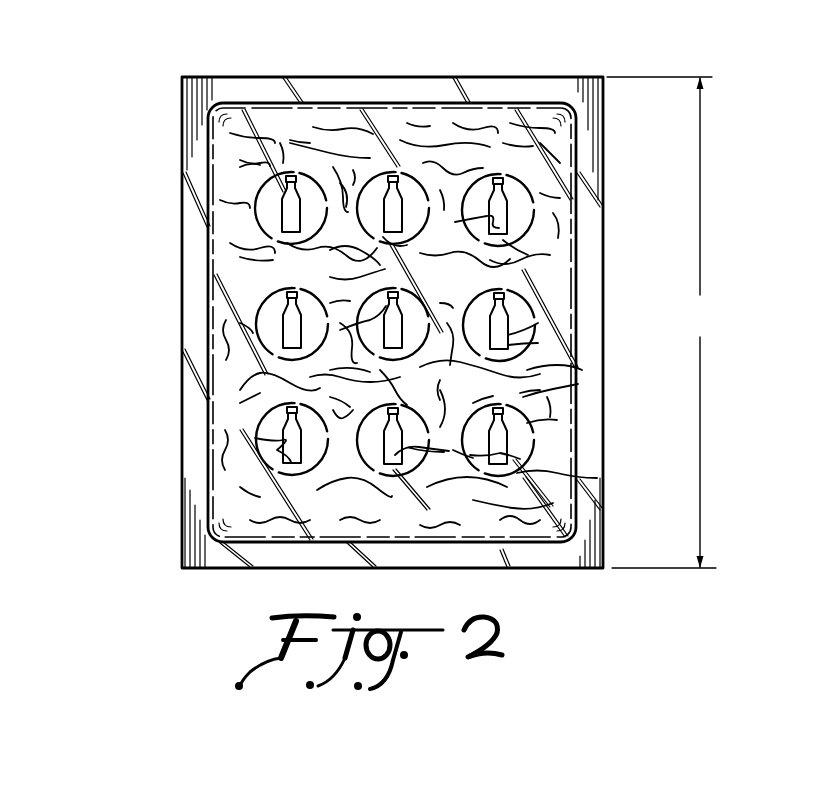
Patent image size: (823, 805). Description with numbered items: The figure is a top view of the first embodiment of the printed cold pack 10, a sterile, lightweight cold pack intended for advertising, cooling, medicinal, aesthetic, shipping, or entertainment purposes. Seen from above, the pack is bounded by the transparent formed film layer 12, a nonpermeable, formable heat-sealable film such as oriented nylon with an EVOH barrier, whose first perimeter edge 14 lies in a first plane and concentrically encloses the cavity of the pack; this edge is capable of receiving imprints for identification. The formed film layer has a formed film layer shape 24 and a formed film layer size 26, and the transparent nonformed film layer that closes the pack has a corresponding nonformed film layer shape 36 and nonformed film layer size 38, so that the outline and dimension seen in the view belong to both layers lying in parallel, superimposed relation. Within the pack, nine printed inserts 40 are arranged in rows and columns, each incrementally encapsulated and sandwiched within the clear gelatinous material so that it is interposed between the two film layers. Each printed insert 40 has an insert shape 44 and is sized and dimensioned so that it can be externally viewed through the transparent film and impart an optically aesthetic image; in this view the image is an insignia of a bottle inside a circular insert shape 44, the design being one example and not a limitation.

The printed cold pack 10 is at (146, 189).
The transparent formed film layer 12 is at (236, 154).
The first perimeter edge 14 is at (243, 86).
The formed film layer shape 24 is at (392, 288).
The nonformed film layer shape 36 is at (414, 77).
The printed insert 40 is at (382, 191).
The insert shape 44 is at (514, 105).
The formed film layer size 26 is at (670, 322).
The nonformed film layer size 38 is at (661, 322).